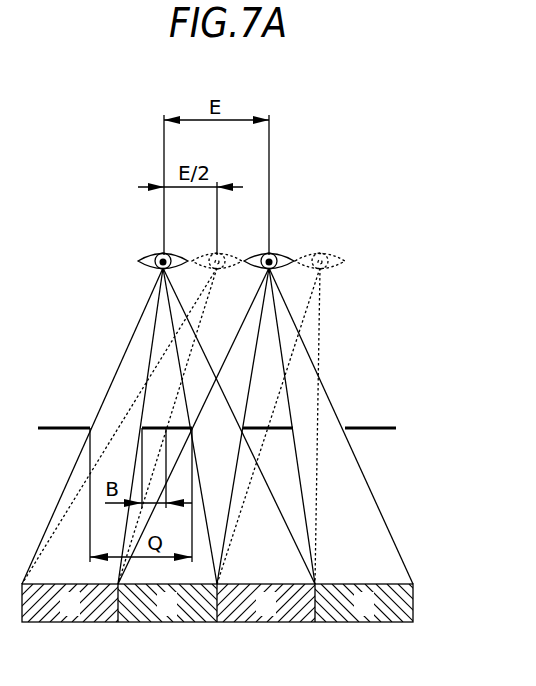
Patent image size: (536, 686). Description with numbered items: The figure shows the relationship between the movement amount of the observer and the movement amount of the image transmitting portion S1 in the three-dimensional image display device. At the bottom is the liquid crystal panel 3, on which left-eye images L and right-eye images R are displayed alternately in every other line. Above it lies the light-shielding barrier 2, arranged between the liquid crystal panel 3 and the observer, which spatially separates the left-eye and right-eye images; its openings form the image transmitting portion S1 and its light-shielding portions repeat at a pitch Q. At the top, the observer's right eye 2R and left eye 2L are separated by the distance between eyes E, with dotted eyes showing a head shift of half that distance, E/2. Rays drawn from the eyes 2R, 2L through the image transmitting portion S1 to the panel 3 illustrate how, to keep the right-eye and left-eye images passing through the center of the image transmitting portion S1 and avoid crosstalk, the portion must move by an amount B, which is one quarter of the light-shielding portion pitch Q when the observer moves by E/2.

The right eye of observer 2R is at (150, 256).
The left eye of observer 2L is at (284, 256).
The light-shielding barrier 2 is at (393, 418).
The image transmitting portion S1 is at (98, 418).
The liquid crystal panel 3 is at (405, 606).